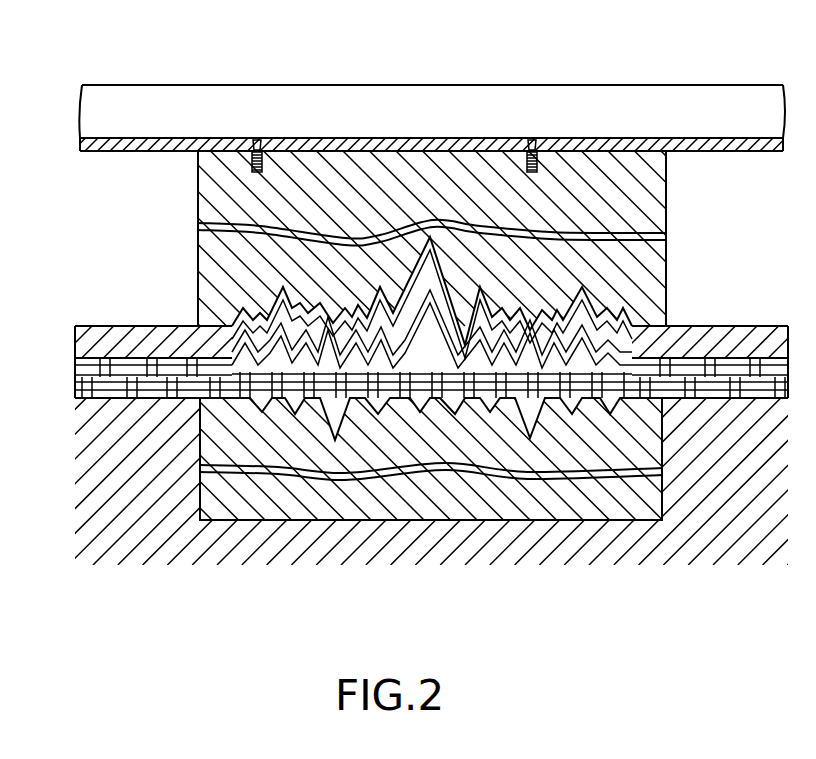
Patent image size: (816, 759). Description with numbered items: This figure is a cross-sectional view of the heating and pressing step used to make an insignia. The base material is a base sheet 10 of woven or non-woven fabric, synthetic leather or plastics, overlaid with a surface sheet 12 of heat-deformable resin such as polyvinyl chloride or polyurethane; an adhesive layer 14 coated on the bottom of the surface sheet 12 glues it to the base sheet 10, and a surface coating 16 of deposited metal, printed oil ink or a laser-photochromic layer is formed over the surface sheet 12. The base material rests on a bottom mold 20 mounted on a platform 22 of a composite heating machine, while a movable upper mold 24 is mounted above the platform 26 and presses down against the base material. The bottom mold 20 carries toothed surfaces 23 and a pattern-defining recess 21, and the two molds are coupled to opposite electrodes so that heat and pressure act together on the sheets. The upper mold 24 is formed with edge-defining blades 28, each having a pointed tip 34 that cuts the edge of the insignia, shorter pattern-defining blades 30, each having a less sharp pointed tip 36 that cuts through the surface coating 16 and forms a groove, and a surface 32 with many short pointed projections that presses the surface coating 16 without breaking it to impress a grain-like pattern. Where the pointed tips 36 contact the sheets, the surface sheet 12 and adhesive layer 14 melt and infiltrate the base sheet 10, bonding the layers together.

The base sheet 10 is at (78, 383).
The surface sheet 12 is at (80, 336).
The adhesive layer 14 is at (142, 355).
The surface coating 16 is at (200, 248).
The bottom mold 20 is at (306, 445).
The pattern-defining recess 21 is at (518, 385).
The platform 22 is at (143, 527).
The toothed surface 23 is at (500, 390).
The upper mold 24 is at (358, 165).
The platform 26 is at (232, 100).
The edge-defining blade 28 is at (230, 328).
The pattern-defining blade 30 is at (533, 367).
The surface with pointed projections 32 is at (202, 222).
The pointed tip 34 is at (185, 340).
The pointed tip 36 is at (605, 303).